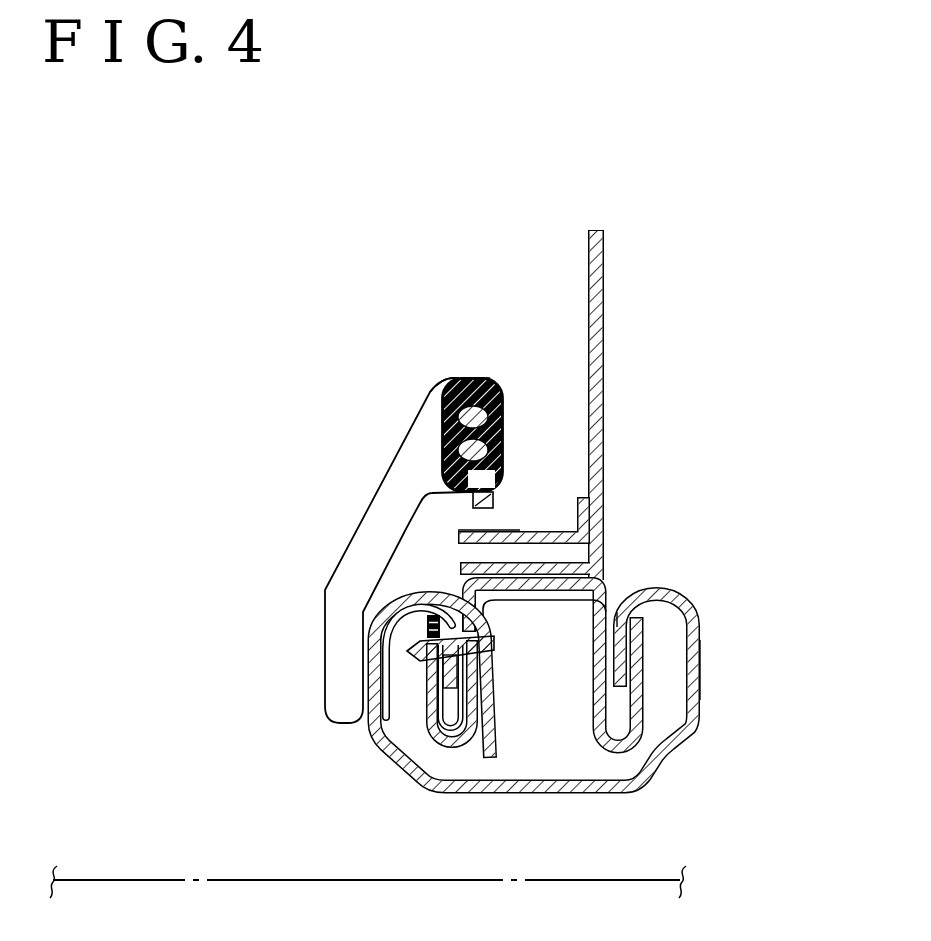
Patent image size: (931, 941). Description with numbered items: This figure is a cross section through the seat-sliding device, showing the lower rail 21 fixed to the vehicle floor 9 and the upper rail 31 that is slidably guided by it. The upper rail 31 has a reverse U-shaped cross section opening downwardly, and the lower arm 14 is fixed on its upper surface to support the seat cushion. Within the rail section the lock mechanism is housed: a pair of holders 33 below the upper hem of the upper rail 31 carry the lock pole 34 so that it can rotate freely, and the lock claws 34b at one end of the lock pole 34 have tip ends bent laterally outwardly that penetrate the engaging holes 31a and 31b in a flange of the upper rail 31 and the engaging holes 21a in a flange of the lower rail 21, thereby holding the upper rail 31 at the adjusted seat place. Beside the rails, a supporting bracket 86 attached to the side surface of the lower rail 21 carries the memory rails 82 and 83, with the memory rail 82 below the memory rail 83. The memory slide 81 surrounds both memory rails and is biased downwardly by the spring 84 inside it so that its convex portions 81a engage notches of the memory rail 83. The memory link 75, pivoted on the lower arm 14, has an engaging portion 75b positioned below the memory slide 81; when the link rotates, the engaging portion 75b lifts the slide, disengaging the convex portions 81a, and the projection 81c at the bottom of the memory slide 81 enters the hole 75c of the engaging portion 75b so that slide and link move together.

The vehicle floor 9 is at (218, 880).
The lower arm 14 is at (587, 303).
The lower rail 21 is at (515, 686).
The engaging holes 21a is at (445, 597).
The upper rail 31 is at (533, 598).
The engaging hole 31a is at (427, 626).
The engaging hole 31b is at (470, 596).
The holders 33 is at (650, 601).
The lock pole 34 is at (490, 665).
The lock claws 34b is at (408, 652).
The memory link 75 is at (604, 478).
The engaging portion 75b is at (607, 506).
The hole 75c is at (520, 520).
The memory slide 81 is at (440, 423).
The convex portions 81a is at (458, 398).
The projection 81c is at (492, 532).
The memory rail 82 is at (503, 445).
The memory rail 83 is at (487, 389).
The spring 84 is at (494, 503).
The supporting brackets 86 is at (405, 438).